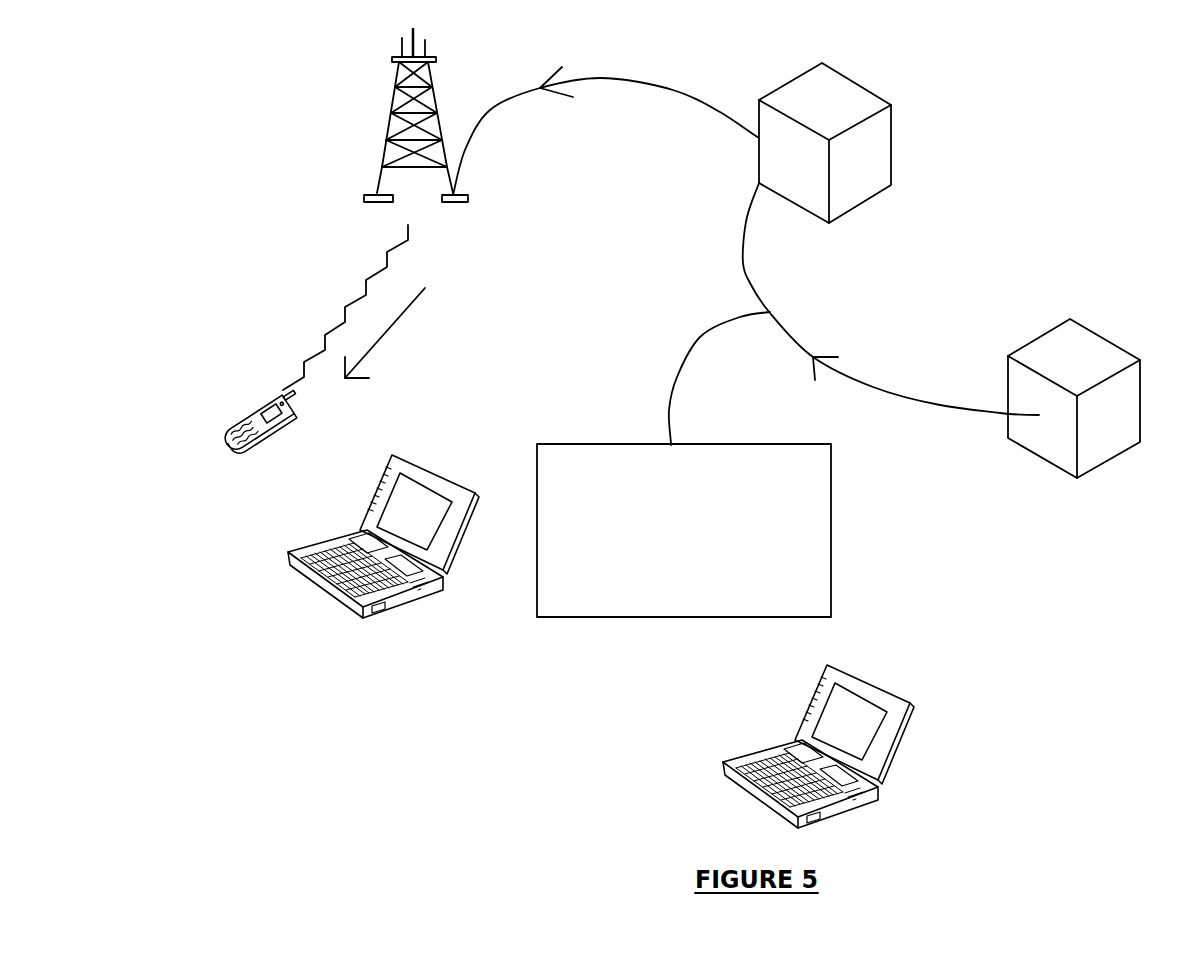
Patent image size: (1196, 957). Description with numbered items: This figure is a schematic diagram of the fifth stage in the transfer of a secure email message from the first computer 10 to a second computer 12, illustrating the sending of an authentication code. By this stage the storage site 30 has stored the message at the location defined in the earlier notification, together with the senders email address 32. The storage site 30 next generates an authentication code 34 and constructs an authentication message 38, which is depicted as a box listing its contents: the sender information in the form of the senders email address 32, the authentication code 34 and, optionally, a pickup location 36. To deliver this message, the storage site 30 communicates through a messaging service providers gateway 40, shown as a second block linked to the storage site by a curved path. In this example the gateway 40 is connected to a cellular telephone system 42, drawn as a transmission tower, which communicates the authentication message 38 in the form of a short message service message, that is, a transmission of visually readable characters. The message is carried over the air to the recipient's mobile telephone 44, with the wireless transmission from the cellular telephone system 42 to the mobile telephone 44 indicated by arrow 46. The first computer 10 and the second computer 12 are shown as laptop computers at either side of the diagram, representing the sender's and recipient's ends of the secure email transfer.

The first computer 10 is at (758, 753).
The second computer 12 is at (378, 610).
The storage site 30 is at (1043, 346).
The senders email address 32 is at (568, 460).
The authentication code 34 is at (550, 527).
The pickup location 36 is at (570, 585).
The authentication message 38 is at (650, 537).
The messaging service providers gateway 40 is at (861, 163).
The cellular telephone system 42 is at (377, 190).
The recipient's mobile telephone 44 is at (238, 416).
The arrow 46 is at (408, 310).